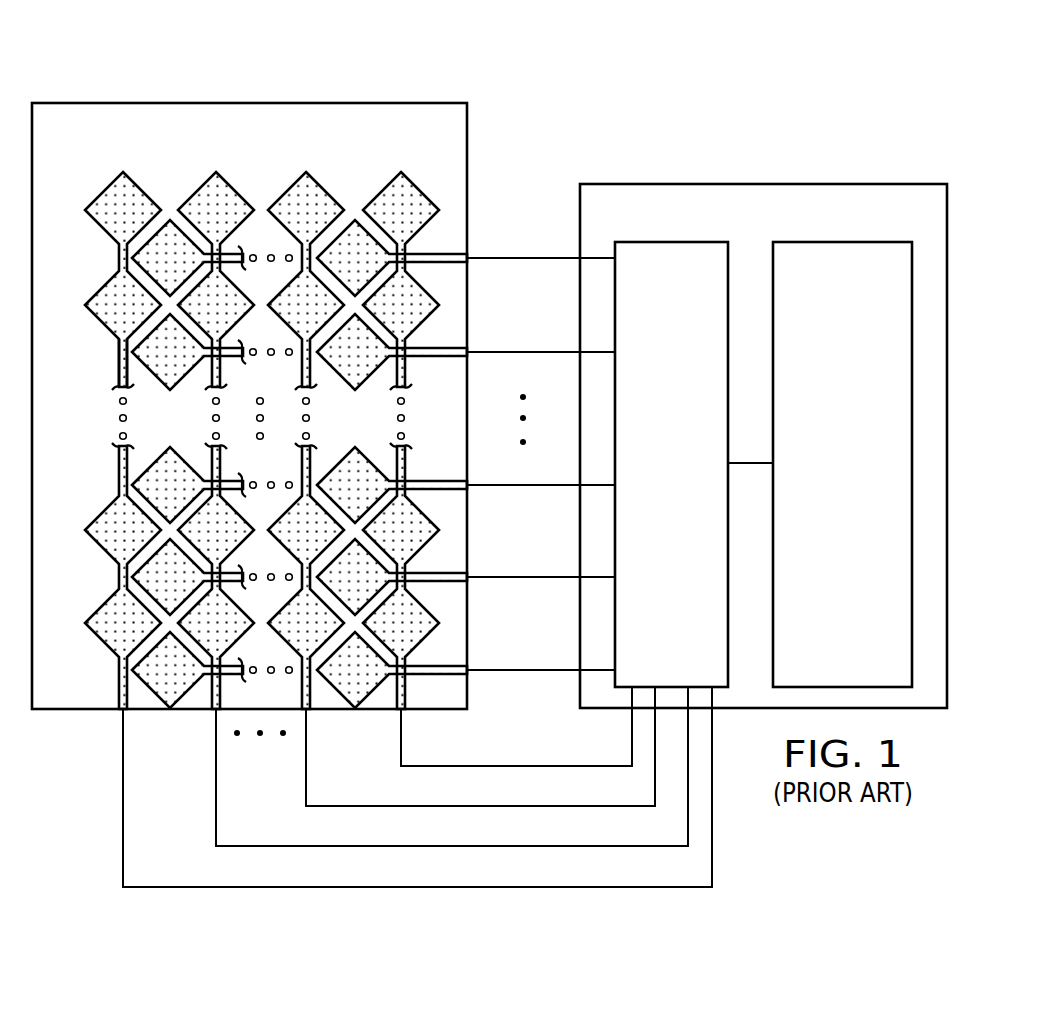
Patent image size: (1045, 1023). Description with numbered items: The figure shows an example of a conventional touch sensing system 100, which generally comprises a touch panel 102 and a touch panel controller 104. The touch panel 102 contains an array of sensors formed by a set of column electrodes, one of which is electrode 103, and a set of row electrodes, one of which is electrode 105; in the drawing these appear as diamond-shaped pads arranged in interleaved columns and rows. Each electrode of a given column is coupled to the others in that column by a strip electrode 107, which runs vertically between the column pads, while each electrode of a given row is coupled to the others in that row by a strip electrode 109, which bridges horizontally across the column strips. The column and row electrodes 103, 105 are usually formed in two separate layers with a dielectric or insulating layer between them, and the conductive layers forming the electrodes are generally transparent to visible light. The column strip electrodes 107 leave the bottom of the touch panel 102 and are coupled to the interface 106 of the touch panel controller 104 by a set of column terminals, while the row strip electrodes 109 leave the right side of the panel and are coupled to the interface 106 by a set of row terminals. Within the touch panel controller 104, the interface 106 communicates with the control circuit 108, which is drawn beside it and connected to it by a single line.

The system 100 is at (661, 78).
The touch panel 102 is at (149, 99).
The column electrode 103 is at (110, 197).
The touch panel controller 104 is at (840, 179).
The row electrode 105 is at (128, 252).
The interface (I/F) 106 is at (650, 497).
The strip electrode 107 is at (119, 367).
The control circuit 108 is at (865, 514).
The strip electrode 109 is at (450, 255).